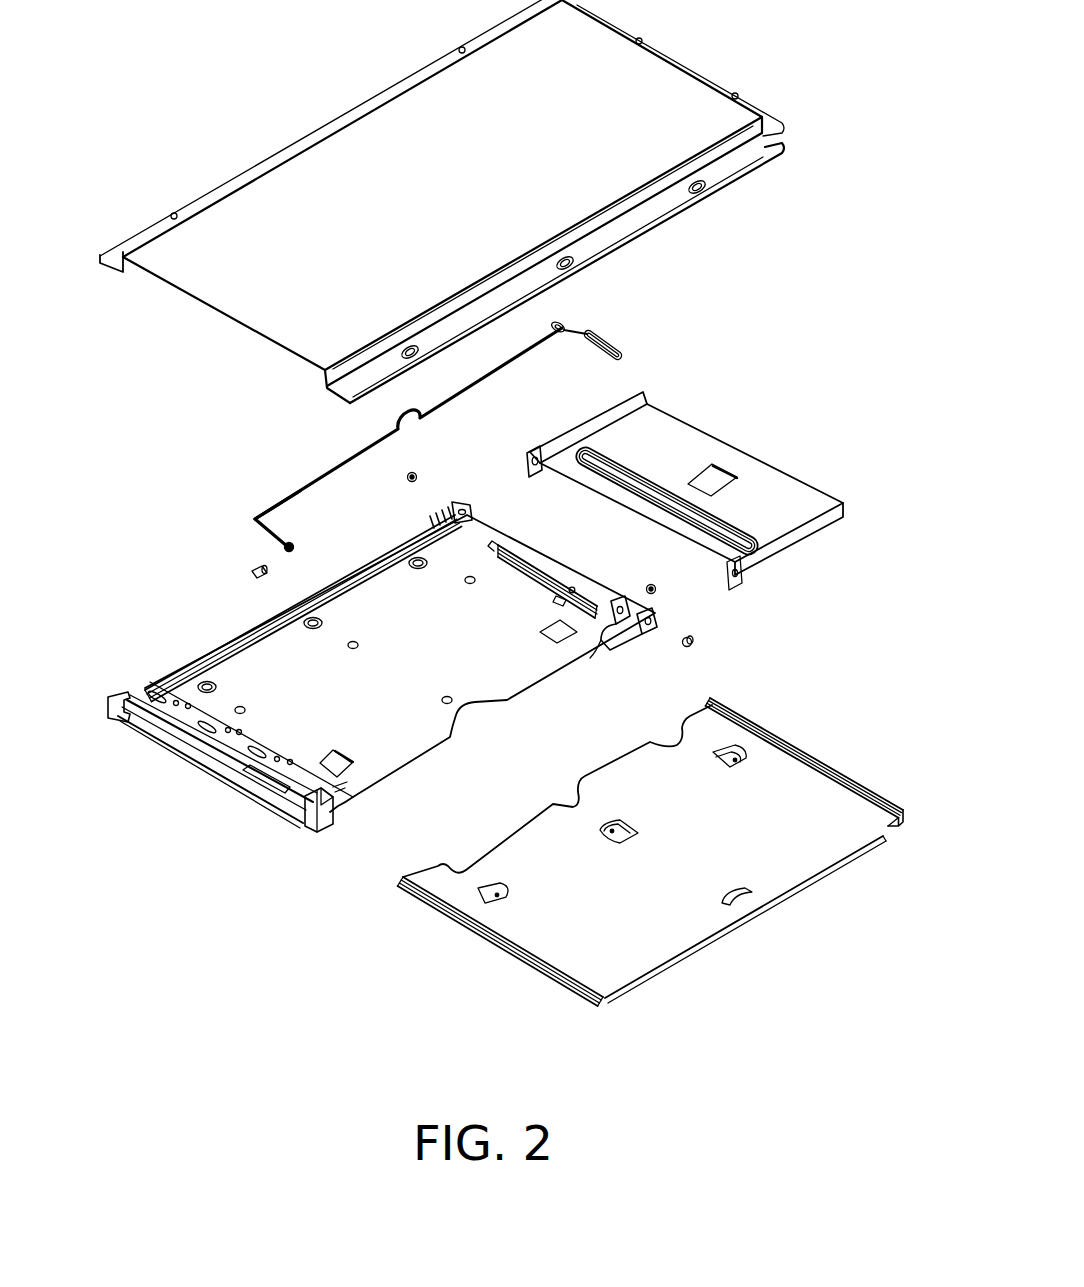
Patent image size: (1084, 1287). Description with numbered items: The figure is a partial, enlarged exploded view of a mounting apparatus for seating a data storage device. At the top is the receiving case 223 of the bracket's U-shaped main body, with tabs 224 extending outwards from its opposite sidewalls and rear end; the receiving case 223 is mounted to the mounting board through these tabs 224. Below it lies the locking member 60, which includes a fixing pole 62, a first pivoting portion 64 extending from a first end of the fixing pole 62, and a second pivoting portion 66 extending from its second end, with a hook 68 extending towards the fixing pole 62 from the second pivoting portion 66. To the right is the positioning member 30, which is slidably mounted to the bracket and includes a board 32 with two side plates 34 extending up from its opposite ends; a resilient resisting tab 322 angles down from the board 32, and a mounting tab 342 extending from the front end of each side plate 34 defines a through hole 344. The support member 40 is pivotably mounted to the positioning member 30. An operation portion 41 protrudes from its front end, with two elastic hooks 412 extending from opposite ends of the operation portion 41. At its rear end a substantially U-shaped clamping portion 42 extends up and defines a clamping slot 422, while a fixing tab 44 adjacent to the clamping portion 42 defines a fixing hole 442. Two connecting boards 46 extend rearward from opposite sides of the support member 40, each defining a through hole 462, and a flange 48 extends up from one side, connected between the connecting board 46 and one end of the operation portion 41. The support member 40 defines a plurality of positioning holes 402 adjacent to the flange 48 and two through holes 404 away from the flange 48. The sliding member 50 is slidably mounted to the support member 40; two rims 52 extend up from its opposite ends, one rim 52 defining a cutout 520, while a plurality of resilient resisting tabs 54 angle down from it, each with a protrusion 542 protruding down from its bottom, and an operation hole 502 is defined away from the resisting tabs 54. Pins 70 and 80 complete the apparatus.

The receiving case 223 is at (268, 202).
The tabs 224 is at (655, 212).
The hook 68 is at (560, 322).
The second pivoting portion 66 is at (625, 354).
The side plates 34 is at (646, 396).
The positioning member 30 is at (733, 424).
The through hole 344 is at (536, 456).
The mounting tab 342 is at (528, 464).
The resilient resisting tab 322 is at (718, 481).
The board 32 is at (795, 508).
The locking member 60 is at (306, 456).
The fixing pole 62 is at (282, 520).
The connecting boards 46 is at (455, 509).
The through hole 462 is at (490, 495).
The clamping portion 42 is at (524, 553).
The positioning holes 402 is at (354, 640).
The clamping slot 422 is at (572, 588).
The fixing hole 442 is at (620, 603).
The first pivoting portion 64 is at (283, 548).
The pins 80 is at (251, 578).
The flange 48 is at (252, 627).
The support member 40 is at (174, 643).
The pins 70 is at (691, 640).
The fixing tab 44 is at (619, 621).
The rims 52 is at (722, 705).
The sliding member 50 is at (799, 713).
The cutout 520 is at (848, 778).
The operation portion 41 is at (284, 797).
The through holes 404 is at (341, 764).
The elastic hooks 412 is at (324, 818).
The resilient resisting tabs 54 is at (446, 912).
The protrusion 542 is at (505, 905).
The operation hole 502 is at (742, 905).